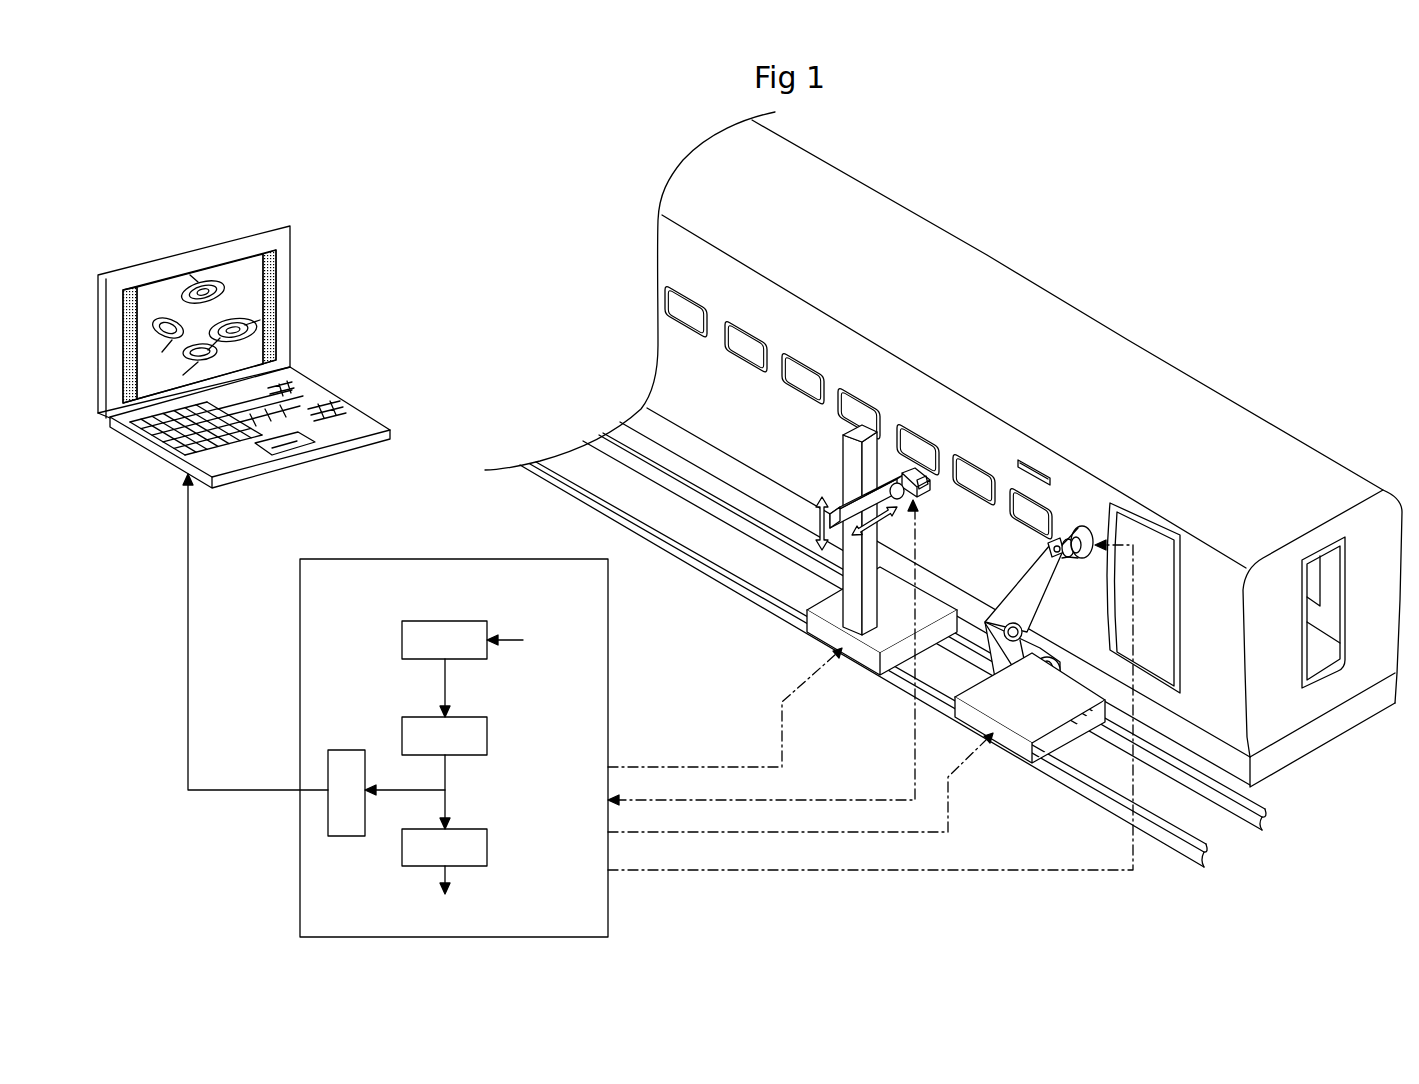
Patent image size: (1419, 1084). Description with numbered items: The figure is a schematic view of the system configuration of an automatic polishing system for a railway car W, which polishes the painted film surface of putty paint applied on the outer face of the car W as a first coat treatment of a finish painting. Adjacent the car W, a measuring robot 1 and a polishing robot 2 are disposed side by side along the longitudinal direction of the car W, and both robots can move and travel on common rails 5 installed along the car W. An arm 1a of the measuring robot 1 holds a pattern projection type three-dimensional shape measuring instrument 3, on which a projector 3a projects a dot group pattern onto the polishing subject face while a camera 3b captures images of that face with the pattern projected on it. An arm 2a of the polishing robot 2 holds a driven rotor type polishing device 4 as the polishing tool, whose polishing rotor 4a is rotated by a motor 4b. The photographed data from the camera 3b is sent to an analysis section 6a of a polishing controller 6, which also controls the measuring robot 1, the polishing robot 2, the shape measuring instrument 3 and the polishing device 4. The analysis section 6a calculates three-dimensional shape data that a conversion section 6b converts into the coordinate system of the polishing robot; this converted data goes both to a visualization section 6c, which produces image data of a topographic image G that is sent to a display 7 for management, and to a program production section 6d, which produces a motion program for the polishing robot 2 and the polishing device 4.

The measuring robot 1 is at (838, 446).
The arm of the measuring robot 1a is at (843, 515).
The polishing robot 2 is at (1027, 627).
The arm of the polishing robot 2a is at (1040, 590).
The three-dimensional shape measuring instrument 3 is at (926, 456).
The projector 3a is at (905, 473).
The camera 3b is at (925, 476).
The driven rotor type polishing device 4 is at (1101, 511).
The polishing rotor 4a is at (1090, 556).
The motor 4b is at (1063, 527).
The common rails 5 is at (1190, 837).
The polishing controller 6 is at (395, 705).
The analysis section 6a is at (424, 621).
The conversion section 6b is at (488, 733).
The visualization section 6c is at (346, 749).
The program production section 6d is at (489, 848).
The display 7 is at (244, 317).
The topographic image G is at (247, 285).
The railway car W is at (903, 229).